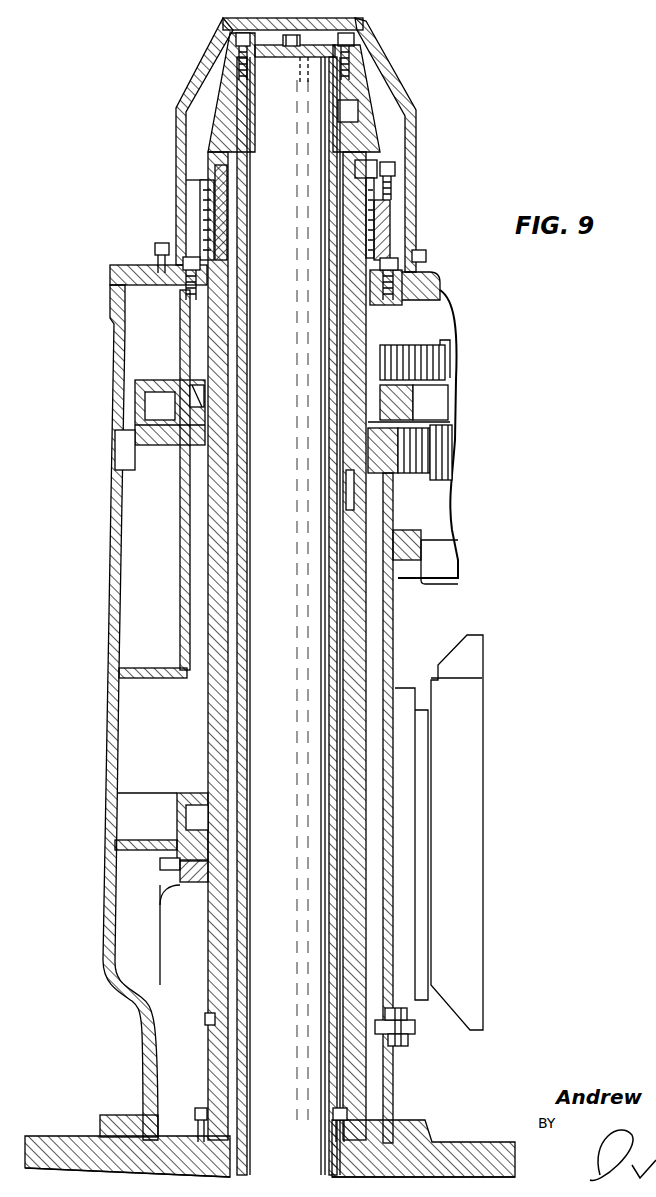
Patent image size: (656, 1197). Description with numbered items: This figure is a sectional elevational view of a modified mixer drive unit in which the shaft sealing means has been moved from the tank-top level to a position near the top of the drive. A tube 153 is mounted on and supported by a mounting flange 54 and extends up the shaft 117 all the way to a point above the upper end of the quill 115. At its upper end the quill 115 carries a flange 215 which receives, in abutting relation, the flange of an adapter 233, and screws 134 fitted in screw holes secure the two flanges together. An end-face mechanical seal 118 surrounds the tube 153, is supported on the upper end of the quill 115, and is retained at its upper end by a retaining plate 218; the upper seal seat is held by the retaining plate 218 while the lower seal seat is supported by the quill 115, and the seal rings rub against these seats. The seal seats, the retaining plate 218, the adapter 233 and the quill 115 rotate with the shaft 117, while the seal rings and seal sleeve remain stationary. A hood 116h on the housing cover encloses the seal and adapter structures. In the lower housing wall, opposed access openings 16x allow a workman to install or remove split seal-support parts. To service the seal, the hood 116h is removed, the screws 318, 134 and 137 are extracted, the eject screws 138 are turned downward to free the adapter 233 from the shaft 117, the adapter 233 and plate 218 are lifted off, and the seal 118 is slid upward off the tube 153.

The eject screws 138 is at (282, 10).
The adapter 233 is at (228, 98).
The screws 137 is at (356, 40).
The hood 116h is at (408, 95).
The retaining plate 218 is at (370, 152).
The screws 318 is at (396, 170).
The screws 134 is at (190, 262).
The end-face mechanical seal 118 is at (240, 215).
The flange 215 is at (168, 298).
The shaft 117 is at (288, 616).
The quill 115 is at (213, 706).
The access openings 16x is at (170, 982).
The tube 153 is at (224, 1058).
The mounting flange 54 is at (176, 1140).